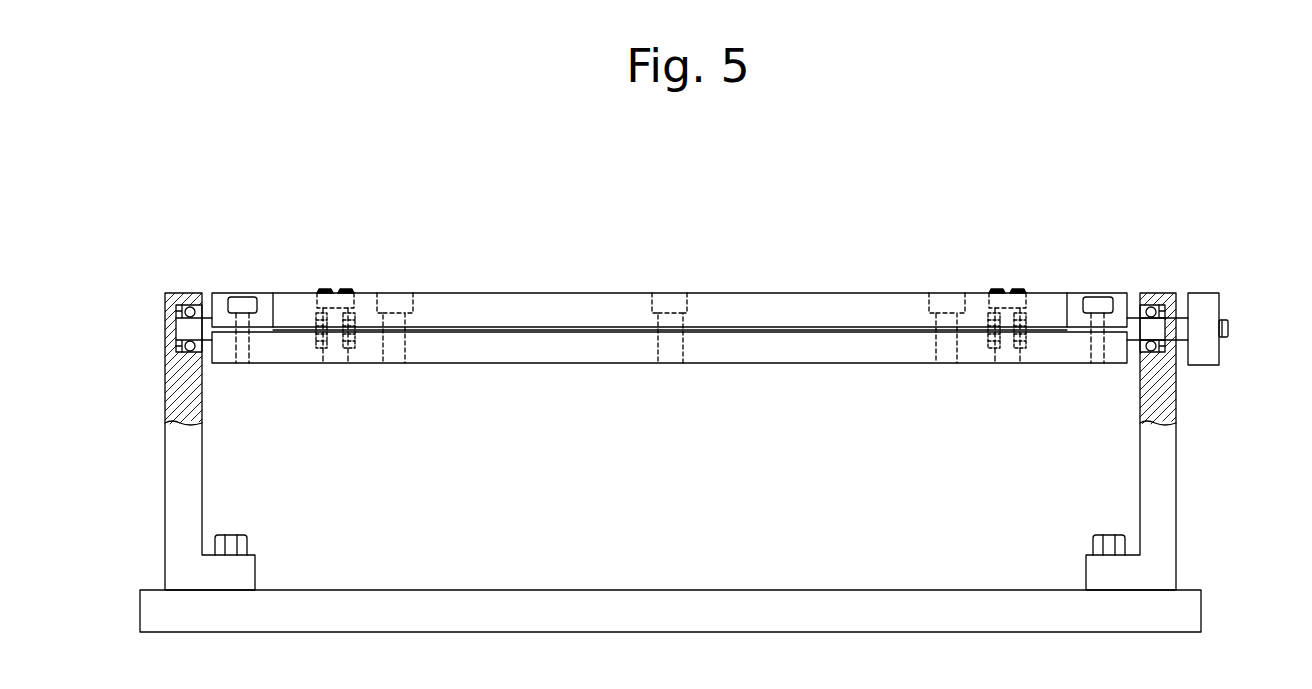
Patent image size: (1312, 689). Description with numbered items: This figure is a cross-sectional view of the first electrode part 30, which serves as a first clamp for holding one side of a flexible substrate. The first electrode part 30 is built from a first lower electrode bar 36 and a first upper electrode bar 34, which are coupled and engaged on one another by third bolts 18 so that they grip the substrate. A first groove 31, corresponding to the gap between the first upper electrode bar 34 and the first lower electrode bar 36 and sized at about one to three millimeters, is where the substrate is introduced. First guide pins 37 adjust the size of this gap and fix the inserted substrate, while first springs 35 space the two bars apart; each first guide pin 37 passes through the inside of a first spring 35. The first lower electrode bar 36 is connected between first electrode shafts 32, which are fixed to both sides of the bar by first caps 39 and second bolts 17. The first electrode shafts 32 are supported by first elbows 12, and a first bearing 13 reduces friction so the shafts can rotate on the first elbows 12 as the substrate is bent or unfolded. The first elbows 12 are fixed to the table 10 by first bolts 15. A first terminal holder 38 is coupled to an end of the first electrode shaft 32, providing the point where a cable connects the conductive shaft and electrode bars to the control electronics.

The table 10 is at (766, 597).
The first elbows 12 is at (178, 455).
The first bearing 13 is at (170, 341).
The first bolts 15 is at (231, 535).
The second bolts 17 is at (242, 300).
The third bolts 18 is at (398, 296).
The first electrode part 30 is at (855, 283).
The first groove 31 is at (772, 327).
The first electrode shafts 32 is at (185, 327).
The first upper electrode bar 34 is at (519, 297).
The first springs 35 is at (318, 321).
The first lower electrode bar 36 is at (578, 363).
The first guide pins 37 is at (342, 292).
The first terminal holder 38 is at (1205, 297).
The first caps 39 is at (265, 297).